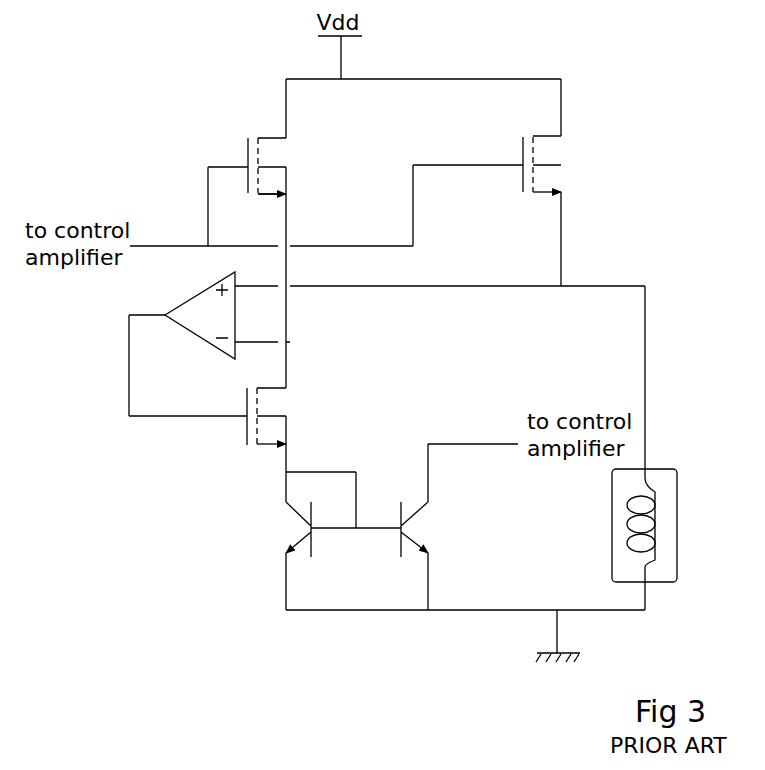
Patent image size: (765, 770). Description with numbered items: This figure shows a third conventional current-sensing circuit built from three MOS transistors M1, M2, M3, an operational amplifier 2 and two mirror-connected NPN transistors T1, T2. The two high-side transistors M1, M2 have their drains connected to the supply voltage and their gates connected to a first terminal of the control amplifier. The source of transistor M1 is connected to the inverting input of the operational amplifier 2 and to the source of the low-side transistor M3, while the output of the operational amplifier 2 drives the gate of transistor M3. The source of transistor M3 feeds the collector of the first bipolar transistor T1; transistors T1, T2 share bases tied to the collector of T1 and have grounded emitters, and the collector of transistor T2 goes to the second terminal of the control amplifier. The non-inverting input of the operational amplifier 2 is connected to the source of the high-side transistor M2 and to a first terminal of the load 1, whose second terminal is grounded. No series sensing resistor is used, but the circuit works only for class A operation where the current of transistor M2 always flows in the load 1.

The load 1 is at (677, 528).
The operational amplifier 2 is at (192, 333).
The high-side MOS transistor M1 is at (287, 166).
The high-side power transistor M2 is at (563, 182).
The low-side MOS transistor M3 is at (286, 416).
The first bipolar transistor T1 is at (323, 514).
The second bipolar transistor T2 is at (459, 527).